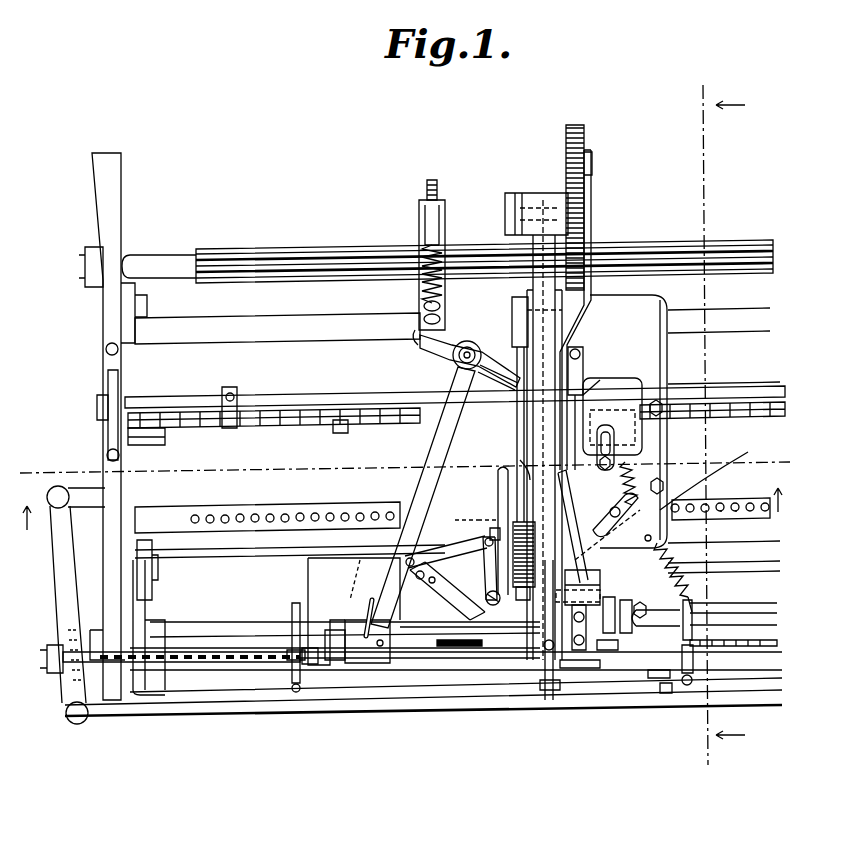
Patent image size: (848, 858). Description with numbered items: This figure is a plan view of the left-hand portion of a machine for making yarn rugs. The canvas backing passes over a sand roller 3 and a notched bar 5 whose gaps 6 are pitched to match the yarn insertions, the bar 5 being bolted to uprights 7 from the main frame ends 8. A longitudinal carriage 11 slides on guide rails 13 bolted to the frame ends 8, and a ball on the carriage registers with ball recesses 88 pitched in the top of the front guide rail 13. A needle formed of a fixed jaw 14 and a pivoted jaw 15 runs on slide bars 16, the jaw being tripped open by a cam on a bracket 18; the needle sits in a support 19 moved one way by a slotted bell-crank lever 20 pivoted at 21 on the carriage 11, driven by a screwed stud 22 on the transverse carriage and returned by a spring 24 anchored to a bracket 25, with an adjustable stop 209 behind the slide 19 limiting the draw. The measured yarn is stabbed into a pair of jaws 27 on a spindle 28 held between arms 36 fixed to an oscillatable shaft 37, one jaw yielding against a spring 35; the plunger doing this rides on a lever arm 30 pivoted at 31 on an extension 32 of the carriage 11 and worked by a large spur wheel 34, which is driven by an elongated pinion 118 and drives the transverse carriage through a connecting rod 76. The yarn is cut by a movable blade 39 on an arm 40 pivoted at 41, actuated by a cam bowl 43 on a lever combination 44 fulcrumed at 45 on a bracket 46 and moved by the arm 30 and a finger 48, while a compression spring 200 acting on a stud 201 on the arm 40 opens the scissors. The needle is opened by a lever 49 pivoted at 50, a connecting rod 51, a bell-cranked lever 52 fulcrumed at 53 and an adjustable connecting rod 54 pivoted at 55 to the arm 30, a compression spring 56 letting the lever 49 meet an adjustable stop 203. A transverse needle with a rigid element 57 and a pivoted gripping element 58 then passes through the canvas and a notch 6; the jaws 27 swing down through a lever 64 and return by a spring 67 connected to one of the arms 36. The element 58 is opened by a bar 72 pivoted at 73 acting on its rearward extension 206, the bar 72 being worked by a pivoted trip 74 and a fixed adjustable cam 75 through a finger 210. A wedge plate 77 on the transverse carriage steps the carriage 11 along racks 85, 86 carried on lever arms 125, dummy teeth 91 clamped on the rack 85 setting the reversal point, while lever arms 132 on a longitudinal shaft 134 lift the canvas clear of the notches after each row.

The sand roller 3 is at (176, 696).
The notched bar 5 is at (213, 668).
The gaps 6 is at (768, 690).
The uprights 7 is at (717, 425).
The main frame ends 8 is at (105, 563).
The carriage 11 is at (622, 300).
The guide rails 13 is at (180, 345).
The fixed jaw 14 is at (462, 650).
The pivoted jaw 15 is at (475, 650).
The slide bars 16 is at (340, 660).
The bracket 18 is at (572, 655).
The support 19 is at (385, 665).
The slotted bell-crank lever 20 is at (485, 350).
The pivot 21 is at (437, 358).
The screwed stud 22 is at (520, 345).
The spring 24 is at (422, 300).
The bracket 25 is at (443, 228).
The pair of jaws 27 is at (544, 690).
The spindle 28 is at (312, 668).
The lever arm 30 is at (540, 665).
The pivot 31 is at (565, 300).
The extension 32 is at (540, 195).
The spur wheel 34 is at (566, 140).
The spring 35 is at (572, 627).
The arms 36 is at (292, 665).
The shaft 37 is at (668, 695).
The movable blade 39 is at (626, 655).
The arm 40 is at (680, 612).
The pivot 41 is at (590, 670).
The cam bowl 43 is at (608, 655).
The lever combination 44 is at (600, 555).
The fulcrum 45 is at (588, 537).
The bracket 46 is at (612, 640).
The finger 48 is at (645, 462).
The lever 49 is at (430, 590).
The pivot 50 is at (428, 583).
The connecting rod 51 is at (449, 549).
The bell-cranked lever 52 is at (504, 582).
The fulcrum 53 is at (484, 600).
The connecting rod 54 is at (520, 466).
The pivot 55 is at (516, 297).
The compression spring 56 is at (490, 535).
The rigid element 57 is at (666, 487).
The pivoted gripping element 58 is at (723, 497).
The lever 64 is at (498, 498).
The spring 67 is at (668, 565).
The bar 72 is at (612, 398).
The pivot 73 is at (582, 350).
The pivoted cam 74 is at (710, 475).
The fixed adjustable cam 75 is at (625, 390).
The connecting rod 76 is at (592, 235).
The wedge shaped plate 77 is at (582, 400).
The rack 85 is at (736, 420).
The rack 86 is at (735, 383).
The ball recesses 88 is at (735, 507).
The dummy teeth 91 is at (335, 433).
The elongated pinion 118 is at (727, 244).
The lever arms 125 is at (163, 440).
The lever arms 132 is at (152, 596).
The longitudinal shaft 134 is at (734, 563).
The compression spring 200 is at (704, 591).
The stud 201 is at (650, 678).
The adjustable stop 203 is at (385, 593).
The rearward extension 206 is at (462, 510).
The adjustable stop 209 is at (290, 632).
The finger 210 is at (624, 447).